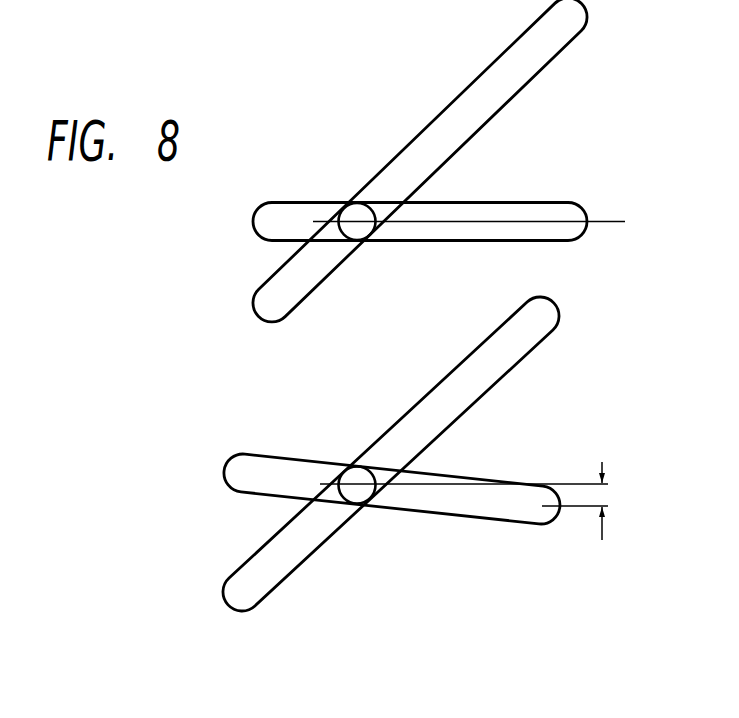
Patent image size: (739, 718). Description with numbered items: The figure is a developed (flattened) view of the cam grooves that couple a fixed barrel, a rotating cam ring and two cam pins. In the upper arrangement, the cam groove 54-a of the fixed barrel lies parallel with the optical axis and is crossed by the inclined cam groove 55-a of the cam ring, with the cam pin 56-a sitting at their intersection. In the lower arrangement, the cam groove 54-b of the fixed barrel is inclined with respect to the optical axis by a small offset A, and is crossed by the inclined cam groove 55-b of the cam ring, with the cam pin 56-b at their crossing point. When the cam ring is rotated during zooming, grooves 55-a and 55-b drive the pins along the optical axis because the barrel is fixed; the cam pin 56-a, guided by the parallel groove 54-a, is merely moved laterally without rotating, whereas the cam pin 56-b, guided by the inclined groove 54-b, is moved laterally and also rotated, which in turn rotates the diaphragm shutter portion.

The cam groove of cam ring 55-a is at (478, 107).
The cam groove of fixed barrel 54-a is at (523, 208).
The cam pin 56-a is at (352, 229).
The cam groove of cam ring 55-b is at (448, 392).
The cam groove of fixed barrel 54-b is at (510, 508).
The cam pin 56-b is at (350, 493).
The offset (displacement) dimension A is at (603, 497).